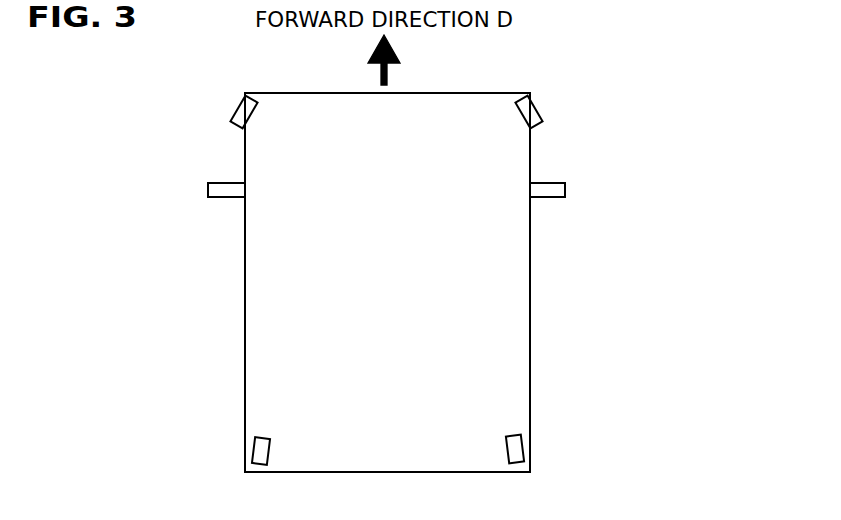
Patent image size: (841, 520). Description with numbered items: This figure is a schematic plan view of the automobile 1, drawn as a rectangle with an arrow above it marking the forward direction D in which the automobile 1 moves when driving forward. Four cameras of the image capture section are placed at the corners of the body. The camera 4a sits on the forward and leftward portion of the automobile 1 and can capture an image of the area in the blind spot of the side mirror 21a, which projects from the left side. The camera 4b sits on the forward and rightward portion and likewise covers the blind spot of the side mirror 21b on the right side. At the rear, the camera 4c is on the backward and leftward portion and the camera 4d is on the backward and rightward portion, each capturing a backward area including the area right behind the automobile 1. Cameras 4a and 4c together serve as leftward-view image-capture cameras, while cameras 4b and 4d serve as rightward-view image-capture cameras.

The automobile 1 is at (608, 128).
The camera 4a is at (243, 111).
The camera 4b is at (531, 111).
The camera 4c is at (260, 447).
The camera 4d is at (518, 447).
The side mirror 21a is at (212, 190).
The side mirror 21b is at (562, 190).